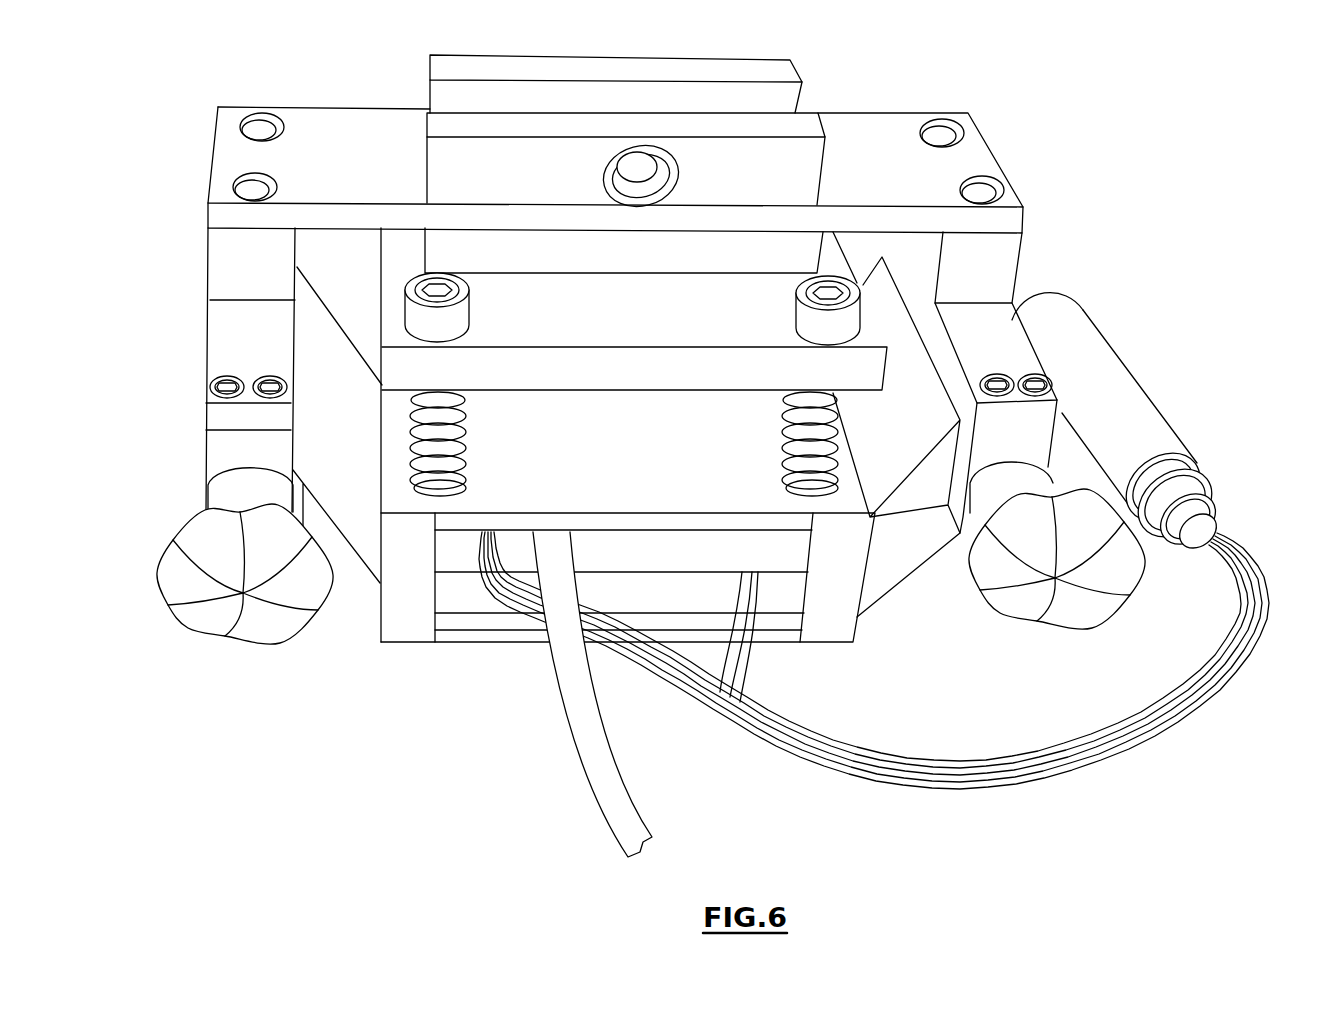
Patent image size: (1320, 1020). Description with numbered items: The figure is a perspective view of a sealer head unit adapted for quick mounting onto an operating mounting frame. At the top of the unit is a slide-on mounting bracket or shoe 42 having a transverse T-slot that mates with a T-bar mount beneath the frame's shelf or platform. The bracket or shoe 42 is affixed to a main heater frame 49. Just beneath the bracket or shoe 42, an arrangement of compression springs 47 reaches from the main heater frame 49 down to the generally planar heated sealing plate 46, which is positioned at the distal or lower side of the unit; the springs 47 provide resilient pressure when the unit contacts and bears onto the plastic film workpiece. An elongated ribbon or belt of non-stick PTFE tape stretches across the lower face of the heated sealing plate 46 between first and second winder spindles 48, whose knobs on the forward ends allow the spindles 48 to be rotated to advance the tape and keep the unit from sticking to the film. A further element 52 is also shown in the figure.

The slide-on mounting bracket or shoe 42 is at (807, 76).
The heated sealing plate 46 is at (490, 642).
The compression springs 47 is at (410, 463).
The winder spindles 48 is at (207, 502).
The main heater frame 49 is at (982, 147).
The wedge bracket 52 is at (903, 580).